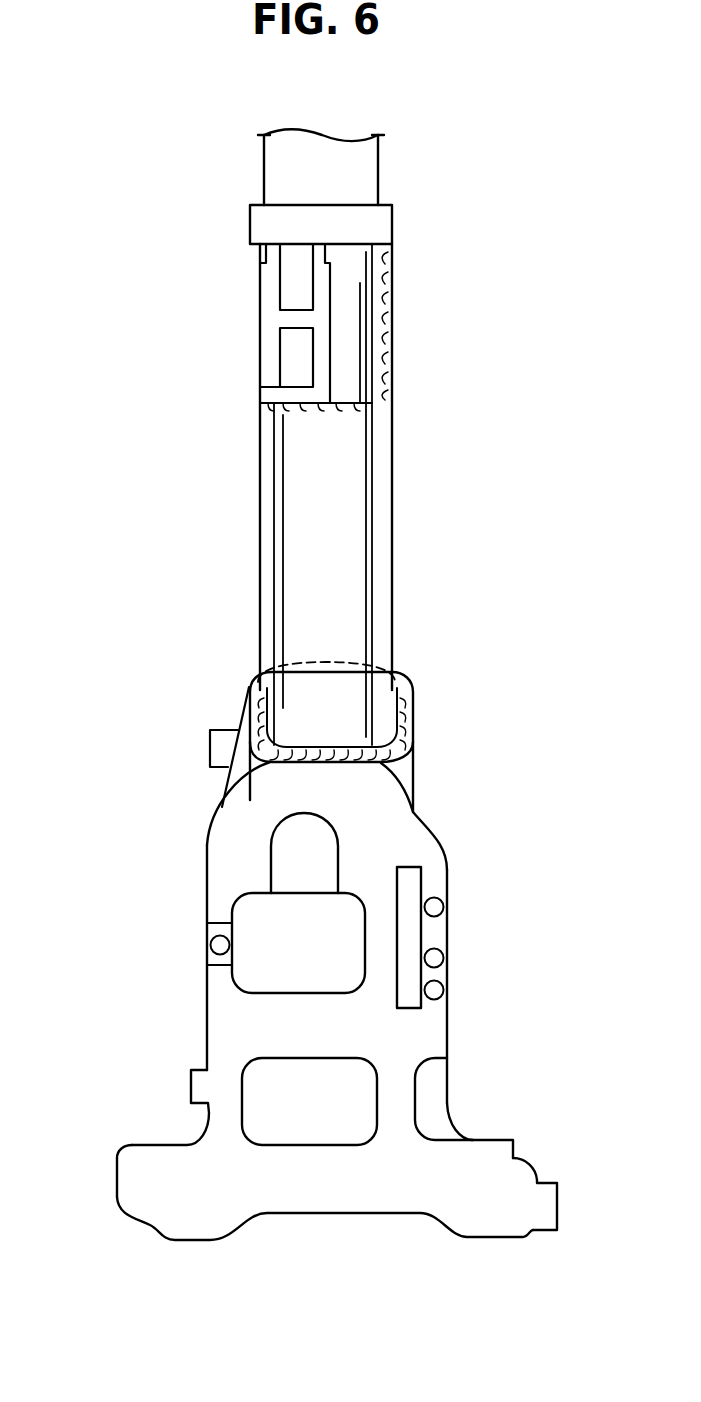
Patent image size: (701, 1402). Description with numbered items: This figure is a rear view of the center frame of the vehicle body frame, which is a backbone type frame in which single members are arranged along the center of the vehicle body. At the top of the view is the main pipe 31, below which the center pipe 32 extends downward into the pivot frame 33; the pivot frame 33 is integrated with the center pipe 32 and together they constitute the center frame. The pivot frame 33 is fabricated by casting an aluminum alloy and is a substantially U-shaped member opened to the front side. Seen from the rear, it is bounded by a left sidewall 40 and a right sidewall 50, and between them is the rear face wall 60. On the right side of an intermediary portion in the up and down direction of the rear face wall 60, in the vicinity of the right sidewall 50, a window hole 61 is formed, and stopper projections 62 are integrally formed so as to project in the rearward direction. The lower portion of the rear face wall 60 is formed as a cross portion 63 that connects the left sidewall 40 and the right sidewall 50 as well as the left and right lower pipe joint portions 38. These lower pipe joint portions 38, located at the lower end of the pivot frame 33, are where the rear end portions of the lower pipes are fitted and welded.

The main pipe 31 is at (270, 152).
The center pipe 32 is at (290, 499).
The pivot frame 33 is at (196, 1018).
The lower pipe joint portions 38 is at (130, 1145).
The left sidewall 40 is at (203, 855).
The right sidewall 50 is at (447, 855).
The rear face wall 60 is at (403, 833).
The window hole 61 is at (415, 929).
The stopper projections 62 is at (447, 957).
The cross portion 63 is at (340, 1203).